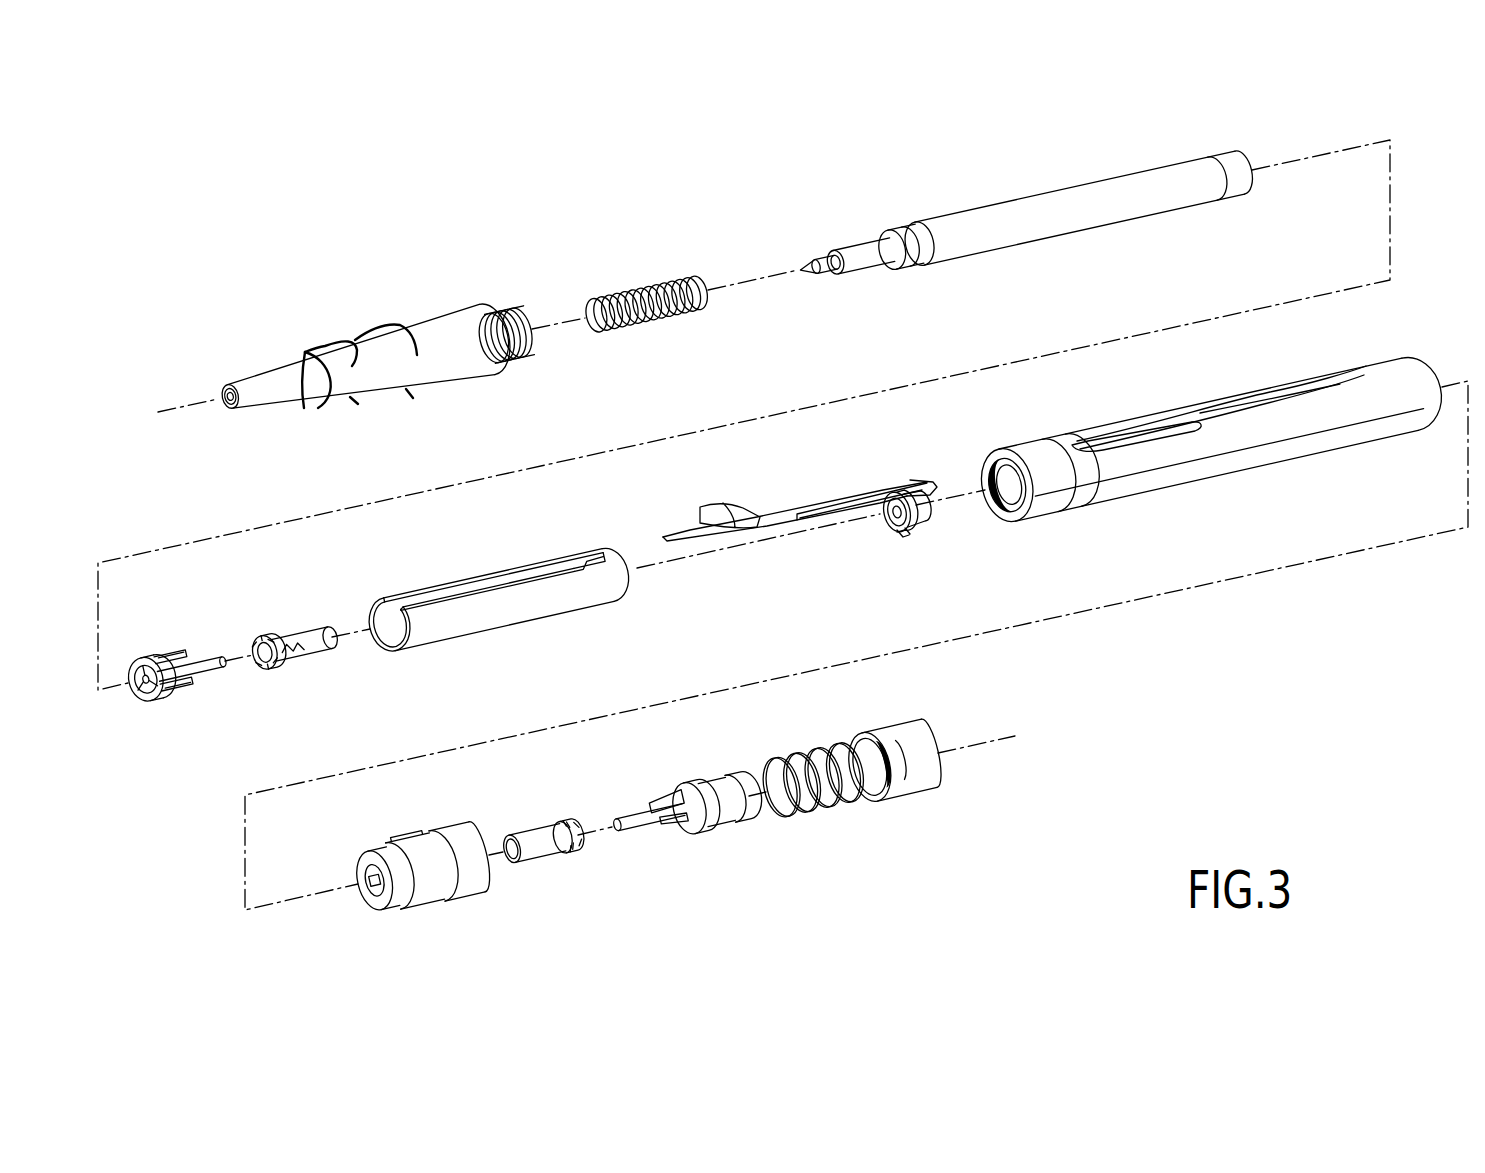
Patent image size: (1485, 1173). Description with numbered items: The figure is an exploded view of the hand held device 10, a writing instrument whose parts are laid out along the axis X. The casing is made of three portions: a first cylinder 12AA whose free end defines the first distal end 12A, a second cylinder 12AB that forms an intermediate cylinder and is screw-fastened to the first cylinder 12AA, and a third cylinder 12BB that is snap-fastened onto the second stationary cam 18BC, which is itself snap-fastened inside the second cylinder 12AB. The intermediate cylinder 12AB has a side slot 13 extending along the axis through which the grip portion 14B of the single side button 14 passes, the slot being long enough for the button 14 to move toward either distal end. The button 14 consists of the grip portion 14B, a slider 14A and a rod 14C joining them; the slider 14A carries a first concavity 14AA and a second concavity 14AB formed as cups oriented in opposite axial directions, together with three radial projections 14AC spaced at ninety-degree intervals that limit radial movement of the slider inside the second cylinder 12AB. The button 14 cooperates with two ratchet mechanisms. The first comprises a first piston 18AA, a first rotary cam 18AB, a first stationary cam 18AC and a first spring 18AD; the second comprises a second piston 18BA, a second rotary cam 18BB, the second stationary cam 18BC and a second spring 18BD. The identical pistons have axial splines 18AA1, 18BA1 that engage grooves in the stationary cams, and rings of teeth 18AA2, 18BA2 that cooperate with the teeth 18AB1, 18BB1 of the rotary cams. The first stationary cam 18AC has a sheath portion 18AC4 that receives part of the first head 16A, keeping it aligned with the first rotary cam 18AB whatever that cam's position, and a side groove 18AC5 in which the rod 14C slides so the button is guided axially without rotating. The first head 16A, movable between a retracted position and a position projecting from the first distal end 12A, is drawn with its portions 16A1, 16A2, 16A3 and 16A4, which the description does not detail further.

The hand held device 10 is at (337, 179).
The first distal end 12A is at (221, 392).
The first cylinder 12AA is at (362, 350).
The second cylinder 12AB is at (1212, 430).
The third cylinder 12BB is at (918, 780).
The side slot 13 is at (1116, 427).
The side button 14 is at (834, 514).
The slider 14A is at (914, 516).
The first concavity 14AA is at (880, 520).
The second concavity 14AB is at (945, 497).
The radial projections 14AC is at (932, 515).
The grip portion 14B is at (712, 512).
The rod 14C is at (826, 498).
The first head 16A is at (1017, 193).
The writing tip 16A1 is at (806, 265).
The refill tube 16A2 is at (1018, 206).
The refill rear end 16A3 is at (1243, 162).
The refill collar 16A4 is at (893, 237).
The first piston 18AA is at (306, 654).
The axial spline 18AA1 is at (290, 672).
The ring of teeth 18AA2 is at (262, 668).
The first rotary cam 18AB is at (177, 680).
The teeth 18AB1 is at (180, 693).
The first stationary cam 18AC is at (499, 592).
The sheath portion 18AC4 is at (480, 625).
The side groove 18AC5 is at (590, 565).
The first spring 18AD is at (640, 300).
The second piston 18BA is at (577, 849).
The axial spline 18BA1 is at (555, 830).
The ring of teeth 18BA2 is at (585, 835).
The second rotary cam 18BB is at (679, 832).
The teeth 18BB1 is at (640, 828).
The second stationary cam 18BC is at (450, 882).
The second spring 18BD is at (822, 800).